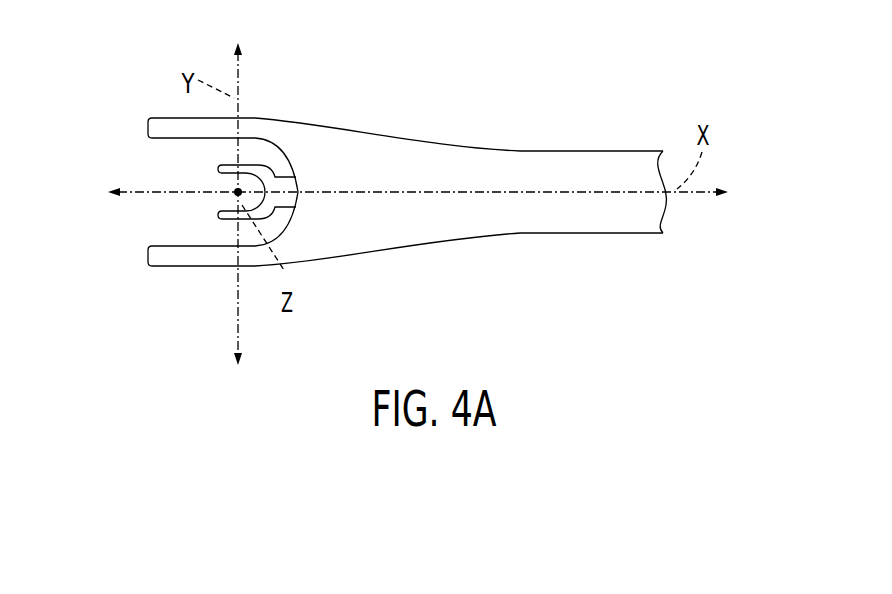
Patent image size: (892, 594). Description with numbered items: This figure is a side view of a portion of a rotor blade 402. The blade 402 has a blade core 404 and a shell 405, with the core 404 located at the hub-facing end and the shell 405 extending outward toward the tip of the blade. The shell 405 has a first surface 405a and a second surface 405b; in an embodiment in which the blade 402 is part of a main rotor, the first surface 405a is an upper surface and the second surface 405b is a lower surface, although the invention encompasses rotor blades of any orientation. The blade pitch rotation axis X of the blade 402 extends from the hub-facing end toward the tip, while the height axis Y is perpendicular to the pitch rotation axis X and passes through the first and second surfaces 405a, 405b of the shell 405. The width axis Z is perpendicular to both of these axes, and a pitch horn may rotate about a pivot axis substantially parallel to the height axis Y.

The rotor blade 402 is at (486, 111).
The blade core 404 is at (281, 176).
The shell 405 is at (408, 227).
The first surface 405a is at (558, 151).
The second surface 405b is at (550, 233).